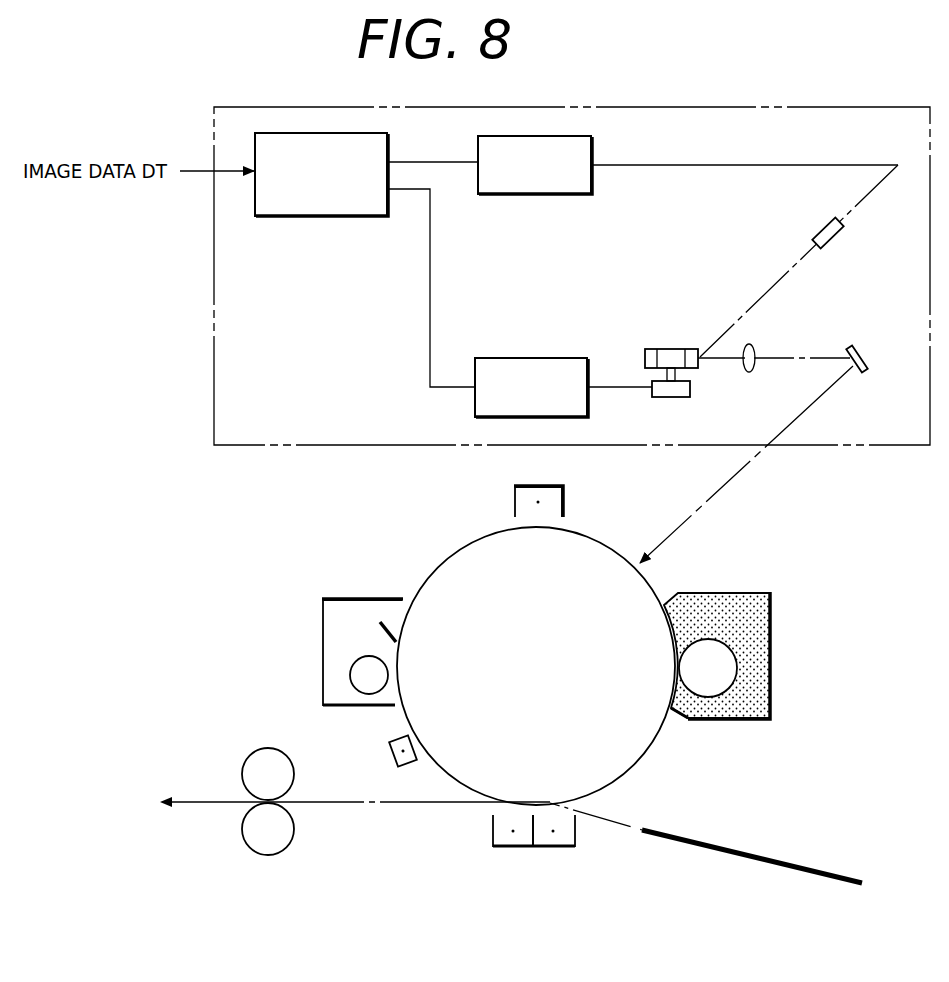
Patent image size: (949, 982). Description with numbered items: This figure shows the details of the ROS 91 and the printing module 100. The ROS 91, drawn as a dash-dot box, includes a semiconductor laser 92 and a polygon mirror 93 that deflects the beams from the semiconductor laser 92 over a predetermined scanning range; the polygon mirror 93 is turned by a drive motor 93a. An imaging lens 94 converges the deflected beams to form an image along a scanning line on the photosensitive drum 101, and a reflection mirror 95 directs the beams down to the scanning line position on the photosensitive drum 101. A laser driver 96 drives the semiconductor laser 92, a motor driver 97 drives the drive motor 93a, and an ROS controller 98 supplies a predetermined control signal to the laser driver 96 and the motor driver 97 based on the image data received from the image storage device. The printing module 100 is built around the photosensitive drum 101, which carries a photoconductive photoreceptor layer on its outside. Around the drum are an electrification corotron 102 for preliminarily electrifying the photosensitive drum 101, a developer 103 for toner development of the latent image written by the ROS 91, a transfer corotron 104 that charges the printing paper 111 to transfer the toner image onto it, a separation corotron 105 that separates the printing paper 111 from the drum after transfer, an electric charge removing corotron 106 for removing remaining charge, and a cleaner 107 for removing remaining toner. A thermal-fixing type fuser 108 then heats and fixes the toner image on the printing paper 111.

The ROS 91 is at (708, 104).
The semiconductor laser 92 is at (818, 236).
The polygon mirror 93 is at (668, 349).
The drive motor 93a is at (683, 398).
The imaging lens 94 is at (753, 350).
The reflection mirror 95 is at (858, 349).
The laser driver 96 is at (541, 195).
The motor driver 97 is at (515, 358).
The ROS controller 98 is at (320, 217).
The printing module 100 is at (750, 546).
The photosensitive drum 101 is at (650, 583).
The electrification corotron 102 is at (562, 495).
The developer 103 is at (770, 625).
The transfer corotron 104 is at (555, 848).
The separation corotron 105 is at (519, 848).
The electric charge removing corotron 106 is at (390, 741).
The cleaner 107 is at (323, 616).
The fuser 108 is at (268, 748).
The printing paper 111 is at (770, 857).